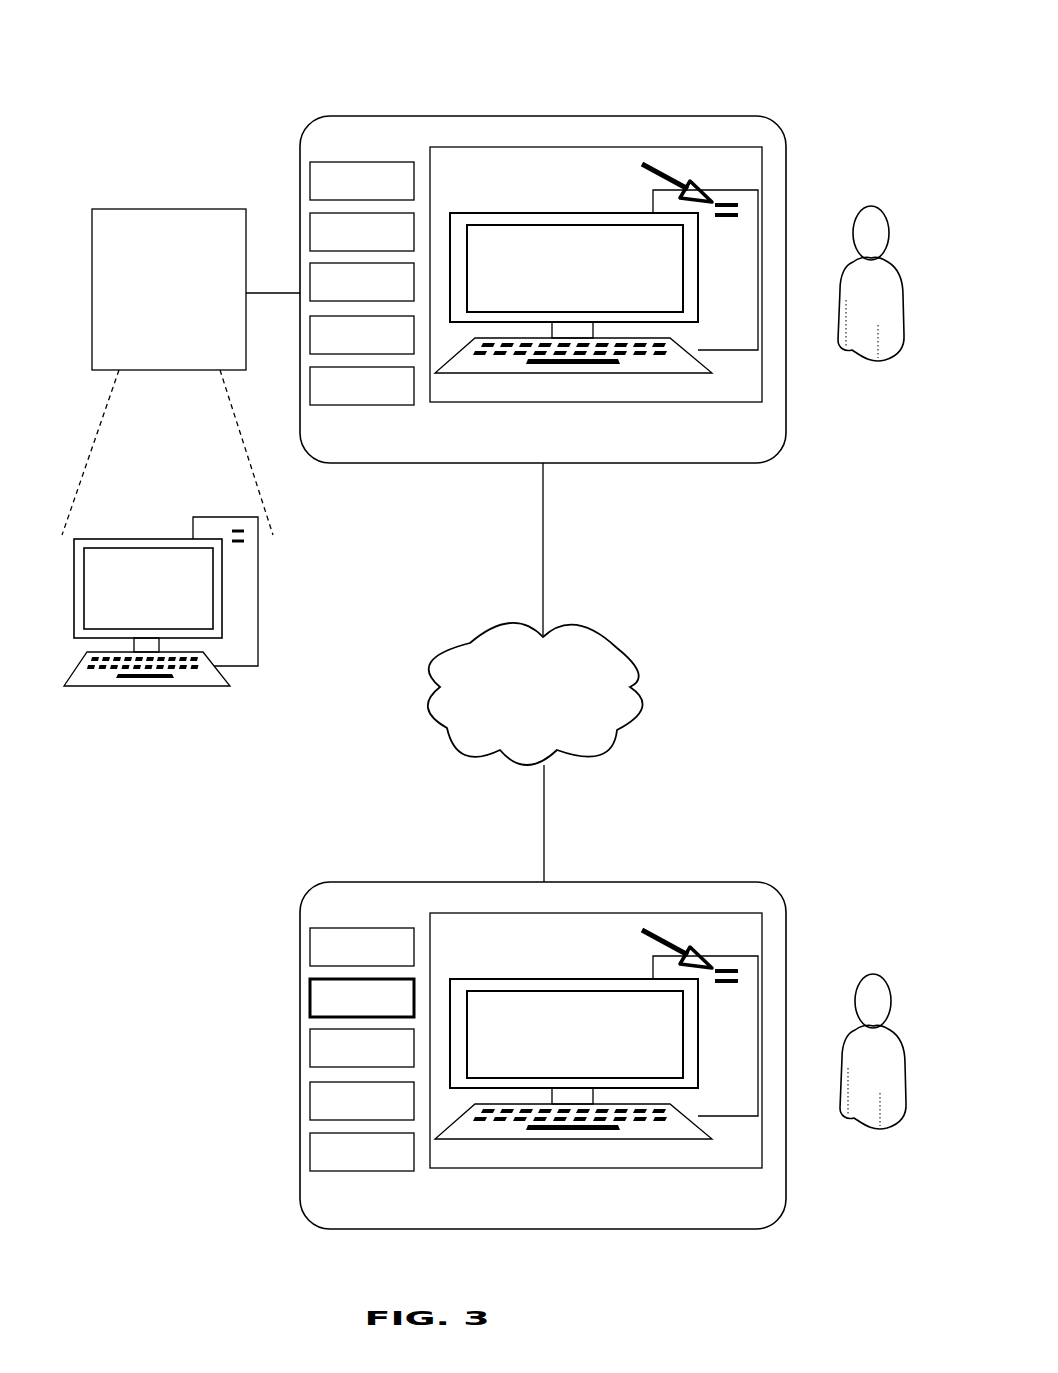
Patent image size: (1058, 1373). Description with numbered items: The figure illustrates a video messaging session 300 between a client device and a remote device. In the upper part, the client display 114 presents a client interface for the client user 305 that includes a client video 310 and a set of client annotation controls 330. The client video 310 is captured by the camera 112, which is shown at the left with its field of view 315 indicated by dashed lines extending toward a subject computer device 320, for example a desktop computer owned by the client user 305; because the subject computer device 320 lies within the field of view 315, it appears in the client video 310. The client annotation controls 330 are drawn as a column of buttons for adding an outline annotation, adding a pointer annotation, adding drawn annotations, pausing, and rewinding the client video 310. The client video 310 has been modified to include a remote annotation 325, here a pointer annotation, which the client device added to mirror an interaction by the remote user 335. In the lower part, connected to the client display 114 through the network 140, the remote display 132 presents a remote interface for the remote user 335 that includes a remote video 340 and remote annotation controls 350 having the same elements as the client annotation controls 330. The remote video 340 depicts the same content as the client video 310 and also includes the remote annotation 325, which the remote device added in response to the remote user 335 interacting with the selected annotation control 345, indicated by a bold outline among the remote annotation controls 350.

The video messaging session 300 is at (77, 38).
The camera 112 is at (150, 314).
The client display 114 is at (487, 103).
The remote display 132 is at (510, 861).
The network 140 is at (516, 718).
The client user 305 is at (853, 436).
The client video 310 is at (595, 402).
The field of view 315 is at (149, 489).
The subject computer device 320 is at (95, 688).
The remote annotation 325 is at (672, 942).
The client annotation controls 330 is at (380, 418).
The remote user 335 is at (847, 1202).
The remote video 340 is at (557, 912).
The selected annotation control 345 is at (254, 1007).
The remote annotation controls 350 is at (250, 1081).